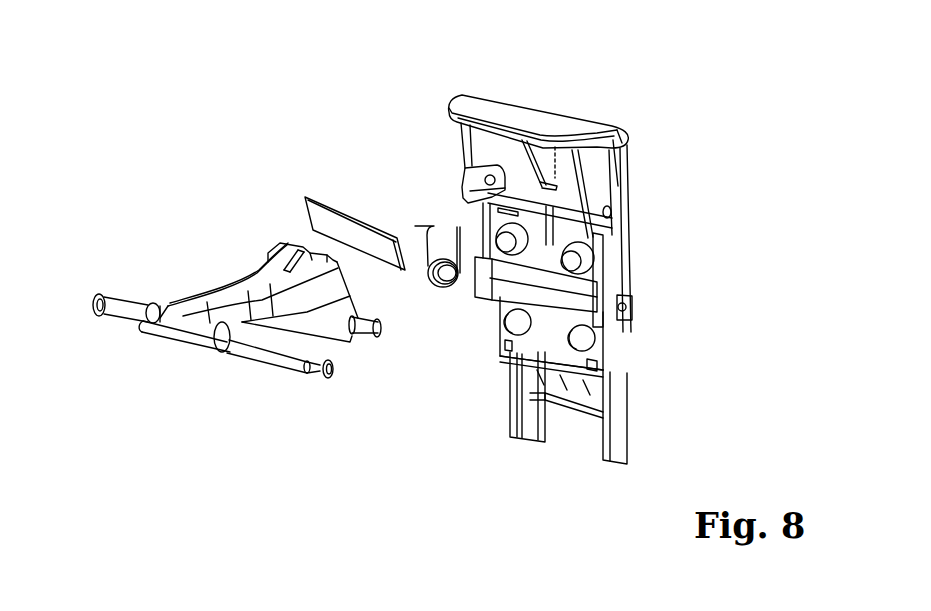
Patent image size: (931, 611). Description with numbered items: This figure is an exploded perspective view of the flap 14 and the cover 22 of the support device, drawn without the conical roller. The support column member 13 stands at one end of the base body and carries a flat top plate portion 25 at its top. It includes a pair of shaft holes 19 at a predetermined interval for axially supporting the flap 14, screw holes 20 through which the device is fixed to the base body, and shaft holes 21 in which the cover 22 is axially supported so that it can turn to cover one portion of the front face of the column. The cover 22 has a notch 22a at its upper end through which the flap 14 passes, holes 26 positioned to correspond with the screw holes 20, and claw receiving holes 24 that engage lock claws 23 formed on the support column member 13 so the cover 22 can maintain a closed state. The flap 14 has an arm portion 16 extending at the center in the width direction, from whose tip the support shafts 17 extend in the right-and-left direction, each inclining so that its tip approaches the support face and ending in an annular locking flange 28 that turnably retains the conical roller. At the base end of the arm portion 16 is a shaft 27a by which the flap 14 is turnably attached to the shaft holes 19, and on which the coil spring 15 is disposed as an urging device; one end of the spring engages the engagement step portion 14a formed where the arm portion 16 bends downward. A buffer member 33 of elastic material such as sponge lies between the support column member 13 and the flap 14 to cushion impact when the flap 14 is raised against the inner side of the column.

The support column member 13 is at (630, 157).
The flap 14 is at (224, 283).
The engagement step portion 14a is at (348, 288).
The coil spring 15 is at (437, 289).
The arm portion 16 is at (199, 308).
The support shaft 17 is at (121, 312).
The shaft hole 19 is at (487, 182).
The screw hole 20 is at (500, 233).
The shaft hole 21 is at (623, 322).
The cover 22 is at (620, 423).
The notch 22a is at (570, 417).
The lock claw 23 is at (503, 170).
The claw receiving hole 24 is at (572, 363).
The flat top plate portion 25 is at (522, 111).
The hole 26 is at (508, 318).
The shaft 27a is at (365, 340).
The annular locking flange 28 is at (97, 293).
The buffer member 33 is at (345, 228).